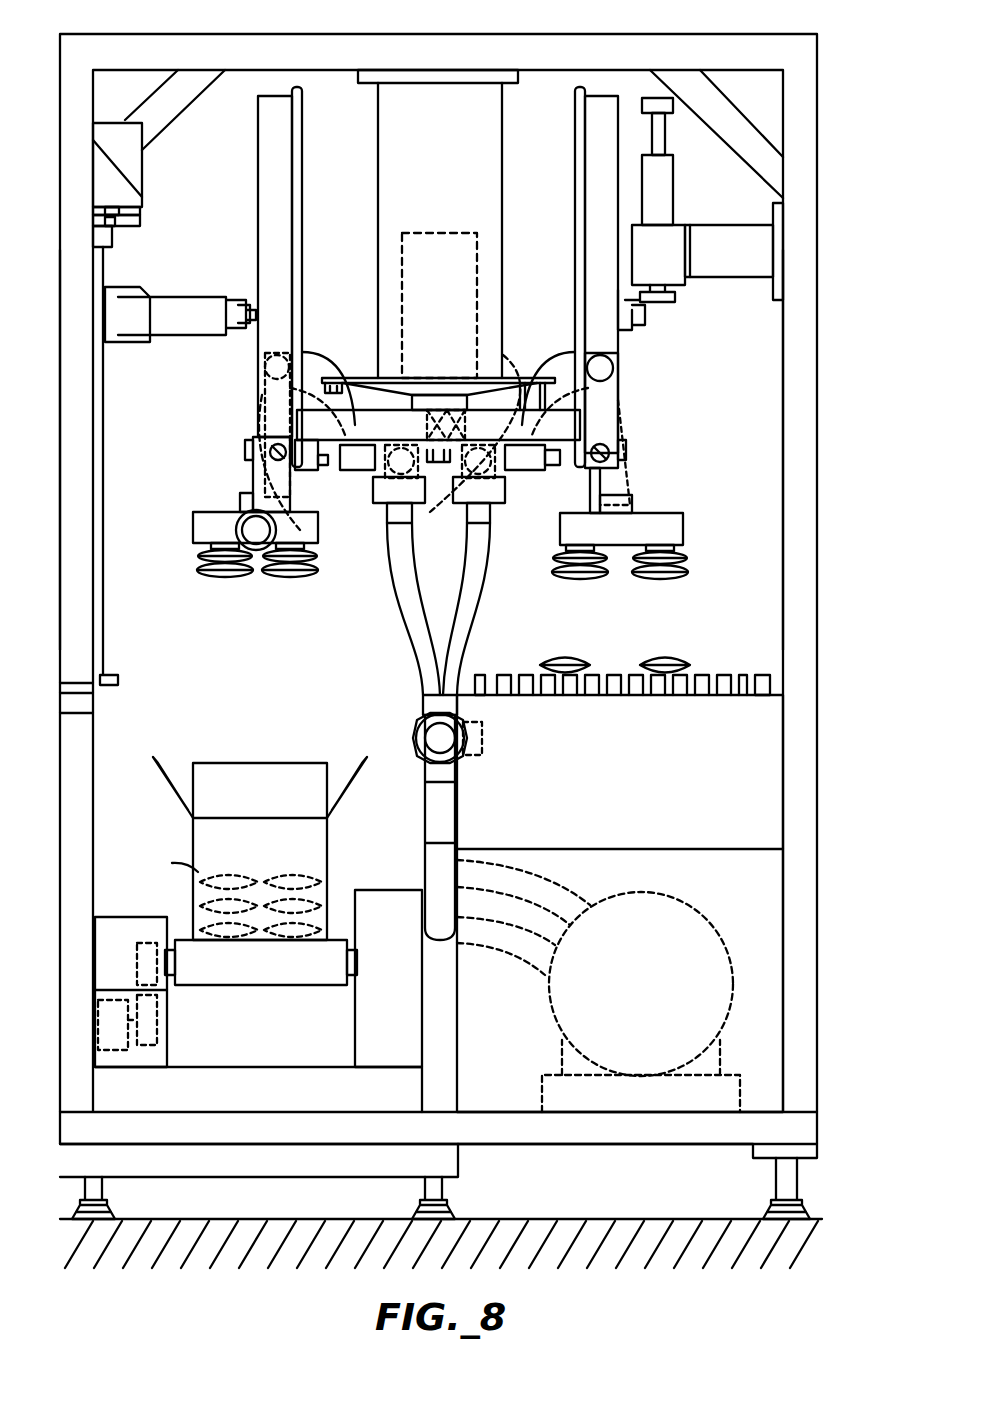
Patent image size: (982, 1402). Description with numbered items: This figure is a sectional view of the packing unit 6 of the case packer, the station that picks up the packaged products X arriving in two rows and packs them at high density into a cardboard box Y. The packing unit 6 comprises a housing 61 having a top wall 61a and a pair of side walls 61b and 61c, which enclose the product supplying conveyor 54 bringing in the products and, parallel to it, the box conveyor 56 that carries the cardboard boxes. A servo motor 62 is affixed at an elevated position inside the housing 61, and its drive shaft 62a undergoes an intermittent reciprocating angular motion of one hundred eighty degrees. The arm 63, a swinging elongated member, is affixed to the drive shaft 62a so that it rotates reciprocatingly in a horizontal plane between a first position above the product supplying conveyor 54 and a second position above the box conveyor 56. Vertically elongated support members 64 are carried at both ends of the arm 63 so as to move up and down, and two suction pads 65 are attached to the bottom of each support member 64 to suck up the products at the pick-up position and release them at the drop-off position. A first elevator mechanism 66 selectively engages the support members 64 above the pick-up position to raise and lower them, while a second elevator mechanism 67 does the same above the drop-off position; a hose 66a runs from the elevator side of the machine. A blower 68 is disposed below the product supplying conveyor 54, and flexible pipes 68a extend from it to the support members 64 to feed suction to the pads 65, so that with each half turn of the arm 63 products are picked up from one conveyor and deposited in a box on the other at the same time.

The packing unit 6 is at (712, 36).
The housing 61 is at (818, 195).
The top wall 61a is at (307, 74).
The side wall 61b is at (88, 476).
The side wall 61c is at (786, 430).
The servo motor 62 is at (420, 233).
The drive shaft 62a is at (498, 366).
The arm 63 is at (403, 428).
The support members 64 is at (268, 230).
The suction pads 65 is at (205, 575).
The first elevator mechanism 66 is at (676, 199).
The hose of cylinder actuator 66a is at (466, 606).
The second elevator mechanism 67 is at (144, 177).
The blower 68 is at (688, 906).
The flexible pipes 68a is at (420, 632).
The product supplying conveyor 54 is at (722, 672).
The box conveyor 56 is at (255, 976).